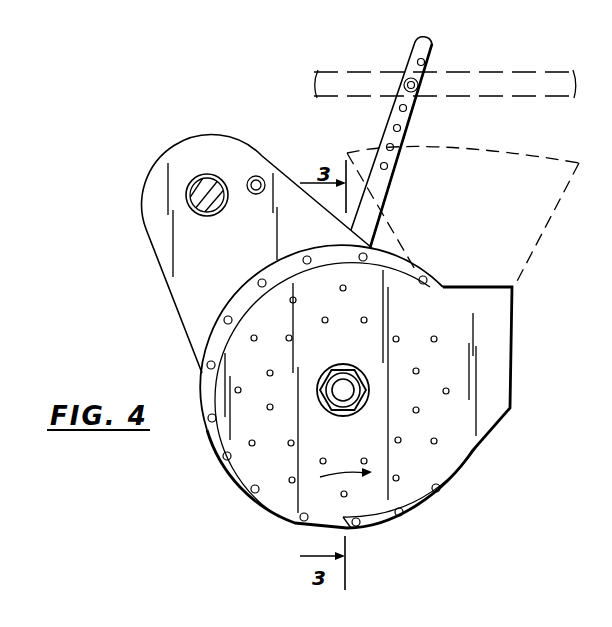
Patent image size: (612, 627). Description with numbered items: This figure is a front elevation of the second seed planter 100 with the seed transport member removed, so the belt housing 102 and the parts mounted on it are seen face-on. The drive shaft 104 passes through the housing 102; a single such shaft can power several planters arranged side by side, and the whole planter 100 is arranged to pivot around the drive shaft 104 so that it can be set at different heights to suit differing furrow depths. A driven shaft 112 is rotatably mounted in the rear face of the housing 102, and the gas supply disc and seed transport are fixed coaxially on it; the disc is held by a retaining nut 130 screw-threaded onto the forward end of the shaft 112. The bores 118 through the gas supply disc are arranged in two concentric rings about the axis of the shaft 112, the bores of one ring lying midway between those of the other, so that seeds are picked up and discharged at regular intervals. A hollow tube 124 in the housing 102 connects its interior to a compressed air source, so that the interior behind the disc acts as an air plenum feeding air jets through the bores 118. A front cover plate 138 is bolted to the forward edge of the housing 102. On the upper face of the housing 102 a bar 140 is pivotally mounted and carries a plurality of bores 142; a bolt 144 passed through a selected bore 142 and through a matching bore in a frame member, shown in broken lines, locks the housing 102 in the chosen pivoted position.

The second seed planter 100 is at (140, 254).
The belt housing 102 is at (160, 184).
The drive shaft 104 is at (193, 178).
The shaft 112 is at (344, 392).
The bores 118 is at (289, 480).
The hollow tube 124 is at (259, 177).
The retaining nut 130 is at (339, 404).
The front cover plate 138 is at (364, 358).
The bar 140 is at (431, 47).
The bores 142 is at (393, 126).
The bolt 144 is at (414, 90).